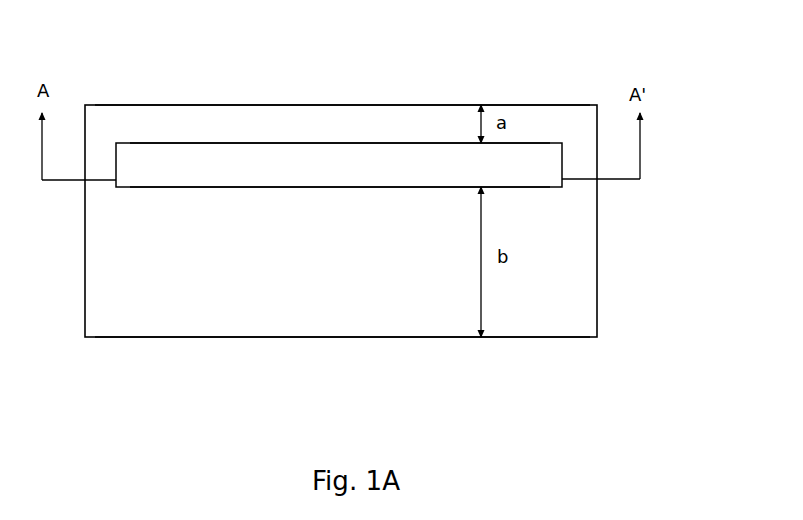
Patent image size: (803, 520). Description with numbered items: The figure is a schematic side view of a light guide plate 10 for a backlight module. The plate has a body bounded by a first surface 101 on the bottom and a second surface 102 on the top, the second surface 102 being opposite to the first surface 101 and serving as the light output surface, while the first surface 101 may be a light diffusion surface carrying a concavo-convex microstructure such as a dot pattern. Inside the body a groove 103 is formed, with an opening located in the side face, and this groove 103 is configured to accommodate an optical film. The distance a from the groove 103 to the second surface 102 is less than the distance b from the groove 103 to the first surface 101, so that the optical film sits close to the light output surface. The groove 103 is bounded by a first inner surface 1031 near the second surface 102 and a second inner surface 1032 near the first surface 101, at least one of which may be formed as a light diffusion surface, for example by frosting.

The light guide plate 10 is at (558, 246).
The first surface 101 is at (430, 337).
The second surface 102 is at (430, 105).
The groove 103 is at (311, 165).
The first inner surface 1031 is at (245, 143).
The second inner surface 1032 is at (243, 187).